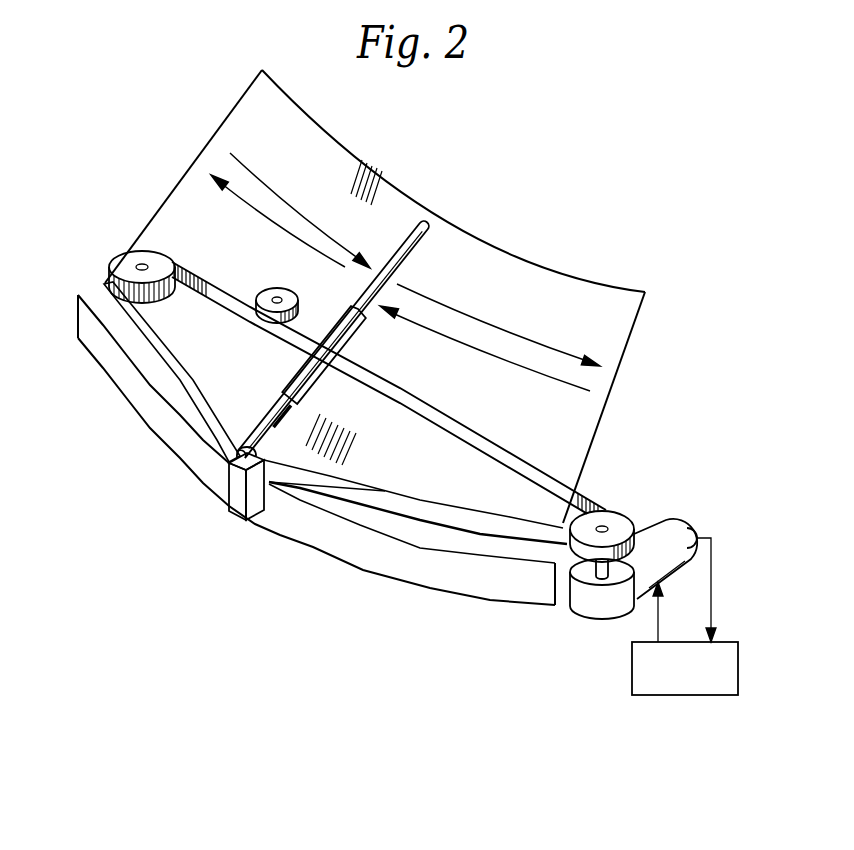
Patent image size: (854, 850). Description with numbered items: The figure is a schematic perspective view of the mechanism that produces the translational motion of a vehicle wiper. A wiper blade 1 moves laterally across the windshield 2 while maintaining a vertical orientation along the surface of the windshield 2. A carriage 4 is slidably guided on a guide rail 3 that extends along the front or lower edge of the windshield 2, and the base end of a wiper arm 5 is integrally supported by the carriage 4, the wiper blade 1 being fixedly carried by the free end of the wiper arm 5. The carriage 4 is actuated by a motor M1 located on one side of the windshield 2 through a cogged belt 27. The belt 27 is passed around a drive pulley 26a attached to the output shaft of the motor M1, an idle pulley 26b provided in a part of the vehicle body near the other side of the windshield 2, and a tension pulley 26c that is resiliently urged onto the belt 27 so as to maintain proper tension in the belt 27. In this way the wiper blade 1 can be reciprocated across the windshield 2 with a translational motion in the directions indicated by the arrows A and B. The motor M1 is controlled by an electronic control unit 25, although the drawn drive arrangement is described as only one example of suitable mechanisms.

The wiper blade 1 is at (427, 238).
The windshield 2 is at (252, 116).
The guide rail 3 is at (104, 370).
The carriage 4 is at (233, 518).
The wiper arm 5 is at (275, 407).
The electronic control unit 25 is at (697, 697).
The drive pulley 26a is at (627, 522).
The idle pulley 26b is at (118, 251).
The tension pulley 26c is at (257, 285).
The cogged belt 27 is at (439, 522).
The motor M1 is at (614, 596).
The arrow A is at (400, 289).
The arrow B is at (415, 259).